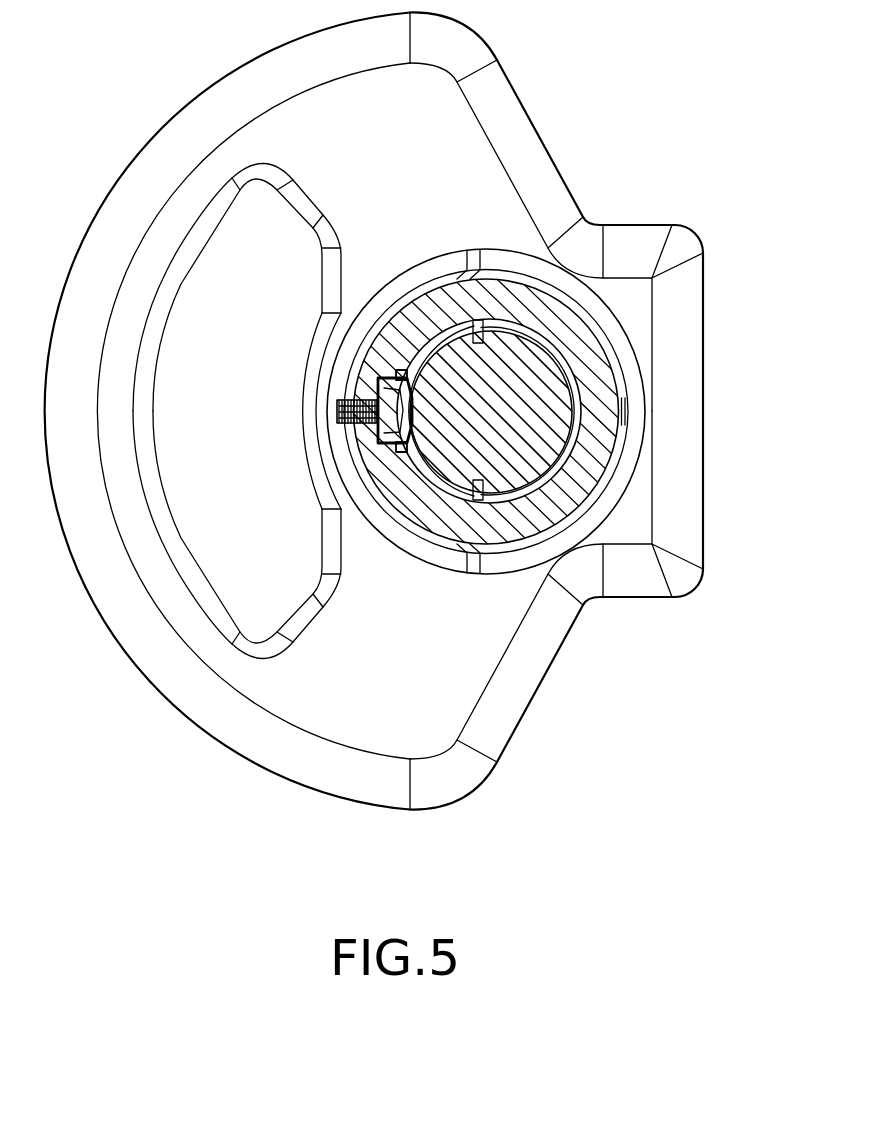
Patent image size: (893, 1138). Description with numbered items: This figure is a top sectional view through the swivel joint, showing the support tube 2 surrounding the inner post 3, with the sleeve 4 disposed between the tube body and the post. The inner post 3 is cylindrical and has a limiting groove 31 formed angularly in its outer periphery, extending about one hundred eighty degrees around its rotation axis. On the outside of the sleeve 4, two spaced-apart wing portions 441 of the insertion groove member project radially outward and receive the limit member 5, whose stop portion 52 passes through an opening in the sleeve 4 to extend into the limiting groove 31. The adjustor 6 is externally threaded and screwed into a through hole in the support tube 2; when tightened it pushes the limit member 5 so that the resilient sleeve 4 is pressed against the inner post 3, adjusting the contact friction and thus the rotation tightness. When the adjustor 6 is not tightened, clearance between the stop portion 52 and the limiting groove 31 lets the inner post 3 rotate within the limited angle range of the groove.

The support tube 2 is at (585, 378).
The inner post 3 is at (540, 453).
The limiting groove 31 is at (440, 478).
The sleeve 4 is at (572, 430).
The wing portions 441 is at (380, 386).
The limit member 5 is at (297, 406).
The stop portion 52 is at (377, 395).
The adjustor 6 is at (377, 428).